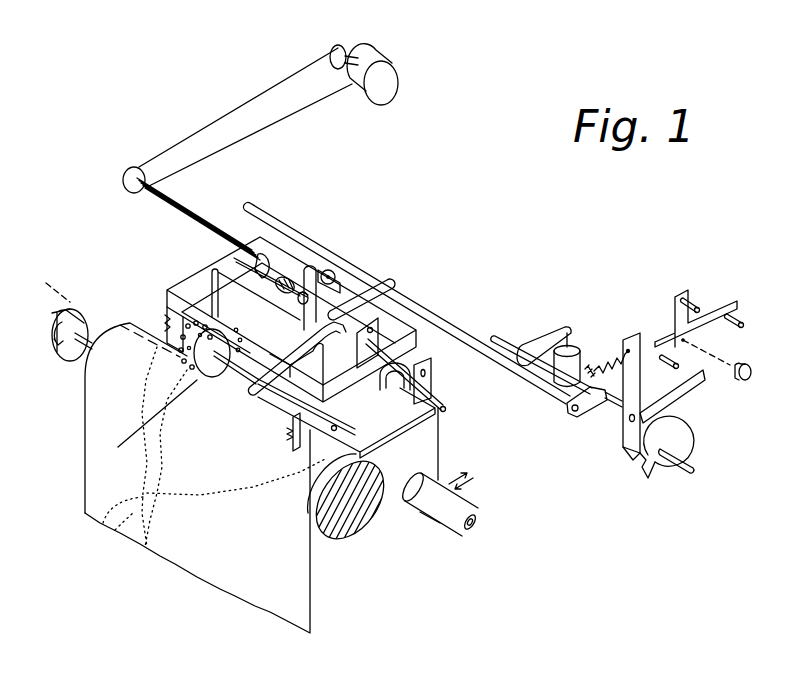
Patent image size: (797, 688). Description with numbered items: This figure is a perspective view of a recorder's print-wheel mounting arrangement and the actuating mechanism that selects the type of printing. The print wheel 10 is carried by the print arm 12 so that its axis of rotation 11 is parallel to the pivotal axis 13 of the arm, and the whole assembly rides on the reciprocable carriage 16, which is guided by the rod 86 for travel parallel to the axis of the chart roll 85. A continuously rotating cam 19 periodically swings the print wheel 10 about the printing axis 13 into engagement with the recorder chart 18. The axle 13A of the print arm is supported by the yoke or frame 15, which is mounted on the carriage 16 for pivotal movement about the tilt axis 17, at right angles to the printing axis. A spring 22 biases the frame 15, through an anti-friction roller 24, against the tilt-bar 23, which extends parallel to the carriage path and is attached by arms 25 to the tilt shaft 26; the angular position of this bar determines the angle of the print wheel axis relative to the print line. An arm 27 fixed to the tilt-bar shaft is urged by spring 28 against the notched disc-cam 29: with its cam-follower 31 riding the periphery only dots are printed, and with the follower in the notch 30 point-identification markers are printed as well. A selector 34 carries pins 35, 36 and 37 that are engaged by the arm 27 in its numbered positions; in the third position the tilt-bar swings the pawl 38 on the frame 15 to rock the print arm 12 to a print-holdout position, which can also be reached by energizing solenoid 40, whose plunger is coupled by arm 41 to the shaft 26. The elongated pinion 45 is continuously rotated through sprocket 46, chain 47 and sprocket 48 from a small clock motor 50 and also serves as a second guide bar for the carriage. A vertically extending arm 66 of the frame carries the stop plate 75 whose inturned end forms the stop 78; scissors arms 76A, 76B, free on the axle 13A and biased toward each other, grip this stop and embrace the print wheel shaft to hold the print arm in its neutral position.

The print wheel 10 is at (167, 318).
The axis of rotation of the print wheel 11 is at (337, 428).
The print arm 12 is at (263, 377).
The pivotal axis 13 is at (212, 270).
The axle of the print arm 13A is at (212, 270).
The yoke or frame 15 is at (172, 312).
The recorder carriage 16 is at (390, 500).
The tilt axis 17 is at (300, 282).
The recorder chart 18 is at (97, 473).
The cam 19 is at (285, 273).
The spring 22 is at (163, 321).
The tilt-bar 23 is at (438, 328).
The anti-friction roller 24 is at (334, 272).
The arms 25 is at (588, 405).
The tilt shaft 26 is at (543, 363).
The arm 27 is at (632, 340).
The spring 28 is at (600, 356).
The notched disc-cam 29 is at (683, 442).
The notch 30 is at (646, 478).
The cam-follower 31 is at (632, 460).
The selector 34 is at (785, 287).
The pin 35 is at (668, 366).
The pin 36 is at (697, 302).
The pin 37 is at (742, 322).
The pawl 38 is at (389, 283).
The solenoid 40 is at (578, 349).
The arm 41 is at (540, 338).
The elongated pinion 45 is at (176, 203).
The sprocket 46 is at (128, 170).
The chain 47 is at (224, 110).
The sprocket 48 is at (346, 50).
The clock motor 50 is at (375, 58).
The arm / bracket extension 66 is at (374, 333).
The stop plate 75 is at (407, 405).
The scissors arm 76A is at (293, 425).
The scissors arm 76B is at (312, 440).
The stop 78 is at (377, 405).
The chart roll 85 is at (343, 523).
The rod 86 is at (474, 509).